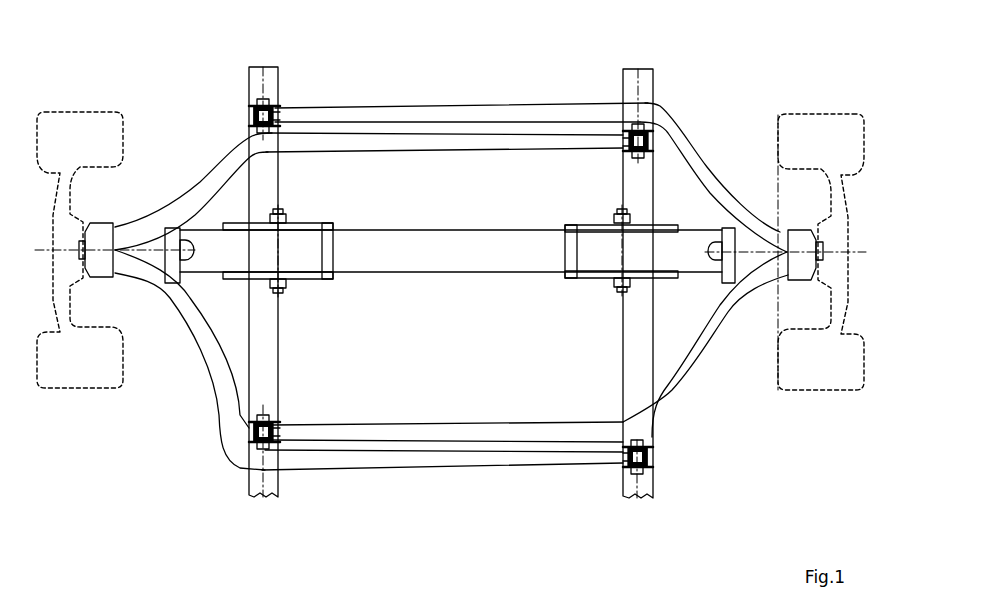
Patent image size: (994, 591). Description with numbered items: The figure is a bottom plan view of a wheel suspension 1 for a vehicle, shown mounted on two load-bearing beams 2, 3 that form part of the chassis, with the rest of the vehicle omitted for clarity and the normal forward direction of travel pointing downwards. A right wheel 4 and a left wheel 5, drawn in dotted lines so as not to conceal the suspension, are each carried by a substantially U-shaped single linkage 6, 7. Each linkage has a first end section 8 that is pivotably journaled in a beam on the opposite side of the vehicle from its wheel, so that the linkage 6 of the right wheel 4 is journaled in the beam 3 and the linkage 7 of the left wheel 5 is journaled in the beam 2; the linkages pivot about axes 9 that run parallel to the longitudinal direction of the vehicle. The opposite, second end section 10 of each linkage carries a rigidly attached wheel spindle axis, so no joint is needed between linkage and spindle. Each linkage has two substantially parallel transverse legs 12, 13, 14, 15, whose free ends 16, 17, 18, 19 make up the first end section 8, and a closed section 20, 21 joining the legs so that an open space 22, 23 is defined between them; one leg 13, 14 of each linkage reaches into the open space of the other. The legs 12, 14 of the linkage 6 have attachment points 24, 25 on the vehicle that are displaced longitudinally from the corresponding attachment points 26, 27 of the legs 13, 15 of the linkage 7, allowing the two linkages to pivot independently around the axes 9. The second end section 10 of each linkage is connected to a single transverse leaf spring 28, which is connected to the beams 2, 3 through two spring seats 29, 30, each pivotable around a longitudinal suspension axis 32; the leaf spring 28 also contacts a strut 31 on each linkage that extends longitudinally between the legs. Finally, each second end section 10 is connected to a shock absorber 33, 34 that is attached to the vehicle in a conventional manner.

The wheel suspension 1 is at (214, 55).
The load-bearing beam 2 is at (263, 68).
The load-bearing beam 3 is at (638, 68).
The right wheel 4 is at (812, 122).
The left wheel 5 is at (93, 120).
The linkage 6 is at (684, 110).
The linkage 7 is at (226, 148).
The first end section 8 is at (288, 122).
The axis 9 is at (268, 72).
The second end section 10 is at (136, 208).
The leg 12 is at (456, 105).
The leg 13 is at (458, 146).
The leg 14 is at (450, 428).
The leg 15 is at (447, 471).
The free end 16 is at (283, 104).
The free end 17 is at (285, 416).
The free end 18 is at (616, 153).
The free end 19 is at (616, 474).
The closed section 20 is at (184, 342).
The closed section 21 is at (713, 345).
The open space 22 is at (410, 328).
The open space 23 is at (490, 328).
The attachment point 24 is at (255, 118).
The attachment point 25 is at (258, 440).
The attachment point 26 is at (652, 142).
The attachment point 27 is at (650, 457).
The leaf spring 28 is at (480, 236).
The spring seat 29 is at (330, 222).
The spring seat 30 is at (573, 222).
The strut 31 is at (180, 270).
The suspension axis 32 is at (300, 268).
The shock absorber 33 is at (196, 266).
The shock absorber 34 is at (701, 272).